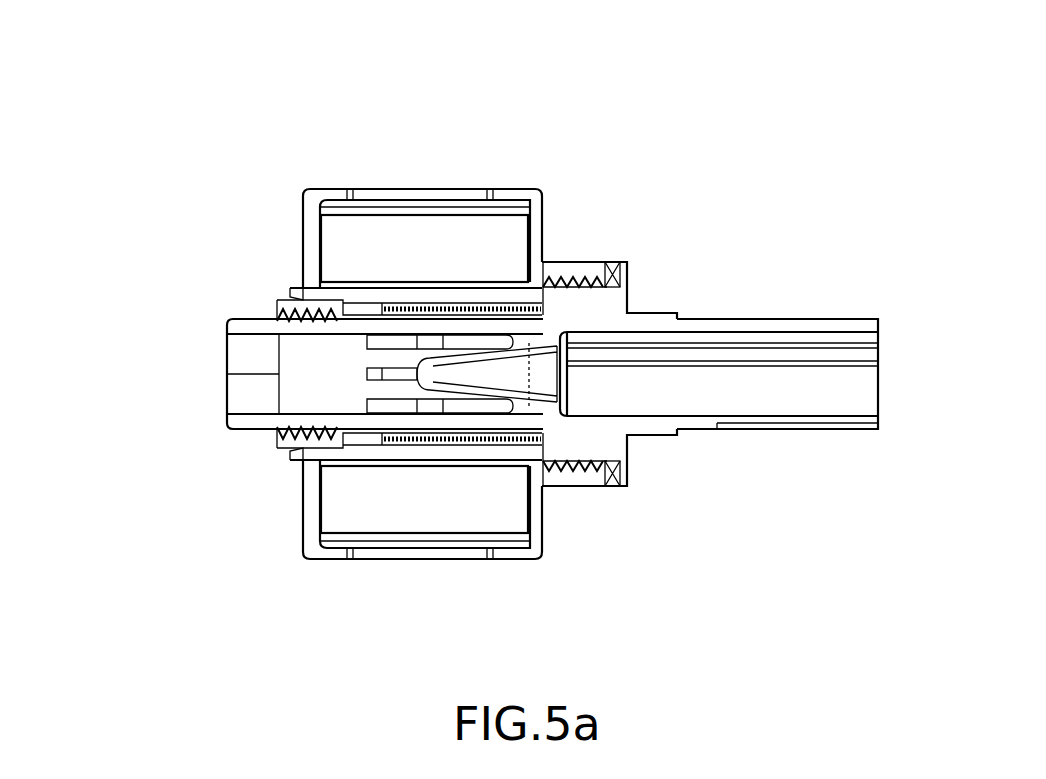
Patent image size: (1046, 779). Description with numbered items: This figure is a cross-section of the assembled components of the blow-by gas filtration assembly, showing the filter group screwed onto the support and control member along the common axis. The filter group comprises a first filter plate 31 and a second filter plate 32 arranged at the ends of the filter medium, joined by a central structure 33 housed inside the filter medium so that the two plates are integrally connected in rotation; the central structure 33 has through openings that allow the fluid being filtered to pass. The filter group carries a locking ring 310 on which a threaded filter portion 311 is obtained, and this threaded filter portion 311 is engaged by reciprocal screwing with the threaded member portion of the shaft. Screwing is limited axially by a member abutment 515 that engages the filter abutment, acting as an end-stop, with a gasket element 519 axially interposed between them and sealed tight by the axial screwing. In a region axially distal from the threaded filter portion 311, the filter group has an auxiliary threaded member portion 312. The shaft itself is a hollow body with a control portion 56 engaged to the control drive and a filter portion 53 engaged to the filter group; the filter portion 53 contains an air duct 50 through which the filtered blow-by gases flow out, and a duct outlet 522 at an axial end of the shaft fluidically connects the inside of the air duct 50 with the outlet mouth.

The first filter plate 31 is at (535, 185).
The second filter plate 32 is at (308, 188).
The central structure 33 is at (373, 300).
The air duct 50 is at (300, 358).
The filter portion 53 is at (256, 431).
The control portion 56 is at (822, 318).
The locking ring 310 is at (583, 498).
The threaded filter portion 311 is at (577, 265).
The auxiliary threaded member portion 312 is at (290, 295).
The member abutment 515 is at (632, 283).
The gasket element 519 is at (628, 475).
The duct outlet 522 is at (242, 398).